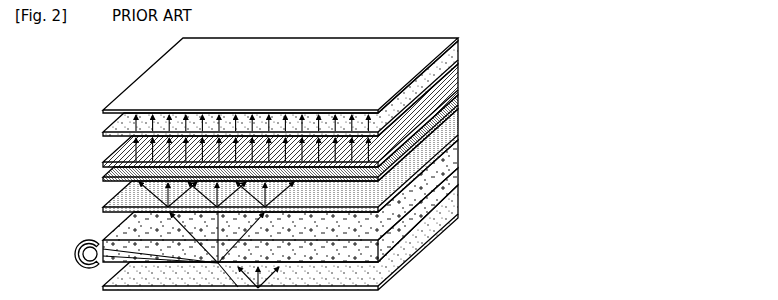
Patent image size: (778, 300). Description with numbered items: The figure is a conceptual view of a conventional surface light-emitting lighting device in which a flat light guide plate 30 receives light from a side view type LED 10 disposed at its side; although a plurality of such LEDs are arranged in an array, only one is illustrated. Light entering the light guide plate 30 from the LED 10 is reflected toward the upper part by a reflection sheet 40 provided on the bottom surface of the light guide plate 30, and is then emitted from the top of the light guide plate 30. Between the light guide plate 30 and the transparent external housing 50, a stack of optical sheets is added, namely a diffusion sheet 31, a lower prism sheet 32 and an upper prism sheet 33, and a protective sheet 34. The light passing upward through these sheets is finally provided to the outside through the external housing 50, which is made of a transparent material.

The side view type LED 10 is at (73, 255).
The light guide plate 30 is at (460, 176).
The diffusion sheet 31 is at (460, 140).
The prism sheet 32 is at (462, 103).
The prism sheet 33 is at (462, 90).
The protective sheet 34 is at (462, 60).
The reflection sheet 40 is at (452, 225).
The external housing 50 is at (462, 38).